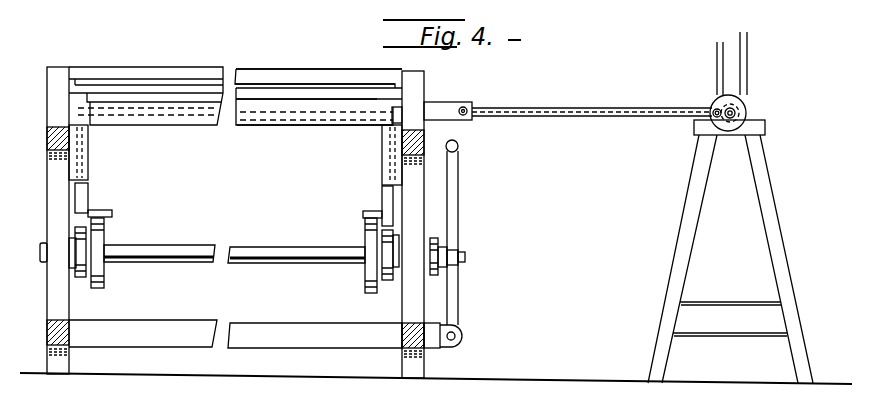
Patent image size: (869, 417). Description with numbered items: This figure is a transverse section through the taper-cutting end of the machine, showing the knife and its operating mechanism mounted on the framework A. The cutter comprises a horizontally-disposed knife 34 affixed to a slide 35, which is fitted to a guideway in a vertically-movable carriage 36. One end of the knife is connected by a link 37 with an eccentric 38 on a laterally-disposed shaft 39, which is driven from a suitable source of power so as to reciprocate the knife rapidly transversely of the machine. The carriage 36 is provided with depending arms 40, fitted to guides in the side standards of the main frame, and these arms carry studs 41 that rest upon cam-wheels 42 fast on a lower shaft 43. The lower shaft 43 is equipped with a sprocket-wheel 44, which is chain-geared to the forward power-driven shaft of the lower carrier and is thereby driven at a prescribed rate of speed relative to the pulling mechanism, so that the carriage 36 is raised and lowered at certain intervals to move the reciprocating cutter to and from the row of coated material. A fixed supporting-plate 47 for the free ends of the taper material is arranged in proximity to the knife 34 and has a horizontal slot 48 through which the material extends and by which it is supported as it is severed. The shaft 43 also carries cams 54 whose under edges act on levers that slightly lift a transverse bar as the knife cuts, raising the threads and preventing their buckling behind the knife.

The knife 34 is at (350, 100).
The slide 35 is at (393, 122).
The carriage 36 is at (198, 118).
The link 37 is at (589, 117).
The eccentric 38 is at (748, 110).
The shaft 39 is at (764, 128).
The depending arms 40 is at (92, 187).
The studs 41 is at (113, 214).
The cam-wheels 42 is at (105, 232).
The lower shaft 43 is at (277, 240).
The sprocket-wheel 44 is at (440, 243).
The supporting-plate 47 is at (267, 83).
The horizontal slot 48 is at (205, 83).
The cams 54 is at (92, 263).
The framework A is at (287, 329).